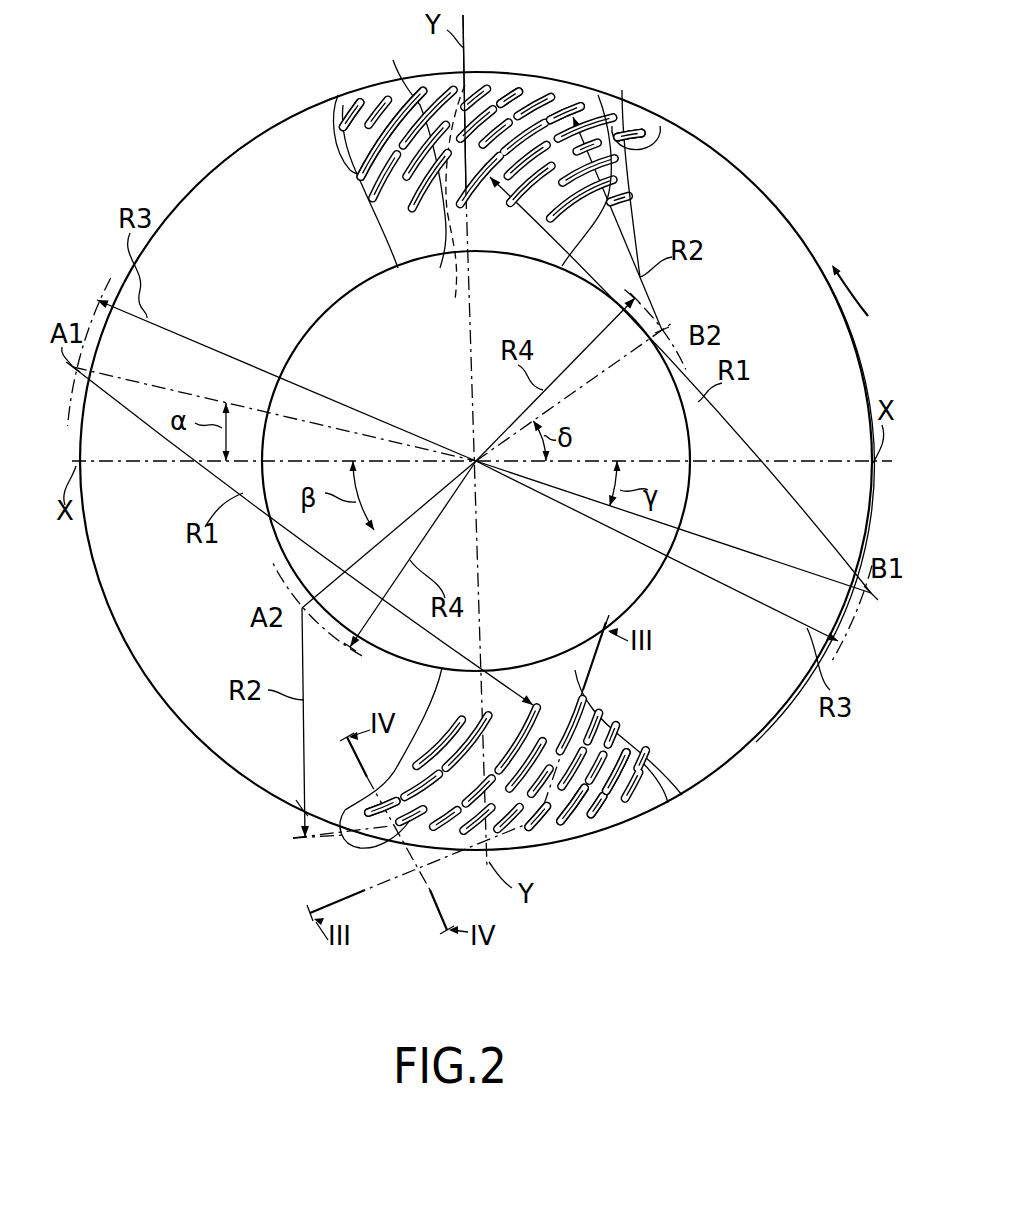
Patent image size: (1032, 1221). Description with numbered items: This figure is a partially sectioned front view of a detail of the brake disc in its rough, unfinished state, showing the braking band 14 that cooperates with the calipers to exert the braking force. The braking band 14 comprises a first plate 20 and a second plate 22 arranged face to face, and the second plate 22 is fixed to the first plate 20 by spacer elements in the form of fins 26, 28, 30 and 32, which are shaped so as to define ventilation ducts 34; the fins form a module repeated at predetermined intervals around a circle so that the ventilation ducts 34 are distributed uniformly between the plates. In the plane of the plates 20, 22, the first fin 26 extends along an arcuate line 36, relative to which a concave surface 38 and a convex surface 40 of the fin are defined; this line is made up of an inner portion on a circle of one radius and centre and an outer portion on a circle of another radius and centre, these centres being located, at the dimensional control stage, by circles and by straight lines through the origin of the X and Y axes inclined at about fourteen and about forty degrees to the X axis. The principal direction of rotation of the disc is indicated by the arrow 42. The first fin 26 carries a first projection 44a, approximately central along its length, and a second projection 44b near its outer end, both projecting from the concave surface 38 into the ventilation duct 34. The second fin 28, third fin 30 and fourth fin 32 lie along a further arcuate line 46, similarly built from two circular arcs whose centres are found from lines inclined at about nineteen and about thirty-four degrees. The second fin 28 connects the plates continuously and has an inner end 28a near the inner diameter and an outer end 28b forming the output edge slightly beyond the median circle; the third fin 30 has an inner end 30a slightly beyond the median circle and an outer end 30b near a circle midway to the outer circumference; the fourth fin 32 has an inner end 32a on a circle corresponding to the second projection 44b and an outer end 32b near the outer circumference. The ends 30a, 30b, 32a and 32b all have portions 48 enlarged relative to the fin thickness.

The braking band 14 is at (709, 180).
The first plate 20 is at (595, 816).
The second plate 22 is at (733, 732).
The first fin 26 is at (538, 820).
The second fin 28 is at (674, 800).
The inner end of the second fin 28a is at (398, 272).
The outer end of the second fin 28b is at (407, 135).
The third fin 30 is at (610, 785).
The inner end of the third fin 30a is at (340, 163).
The outer end of the third fin 30b is at (352, 118).
The fourth fin 32 is at (568, 822).
The inner end of the fourth fin 32a is at (628, 116).
The outer end of the fourth fin 32b is at (649, 117).
The ventilation duct 34 is at (482, 78).
The arcuate line 36 is at (315, 840).
The concave surface 38 is at (300, 808).
The convex surface 40 is at (390, 845).
The arrow representing the principal direction of rotation 42 is at (863, 299).
The first projection 44a is at (530, 95).
The second projection 44b is at (585, 102).
The further arcuate line 46 is at (452, 268).
The enlarged portions 48 is at (337, 156).